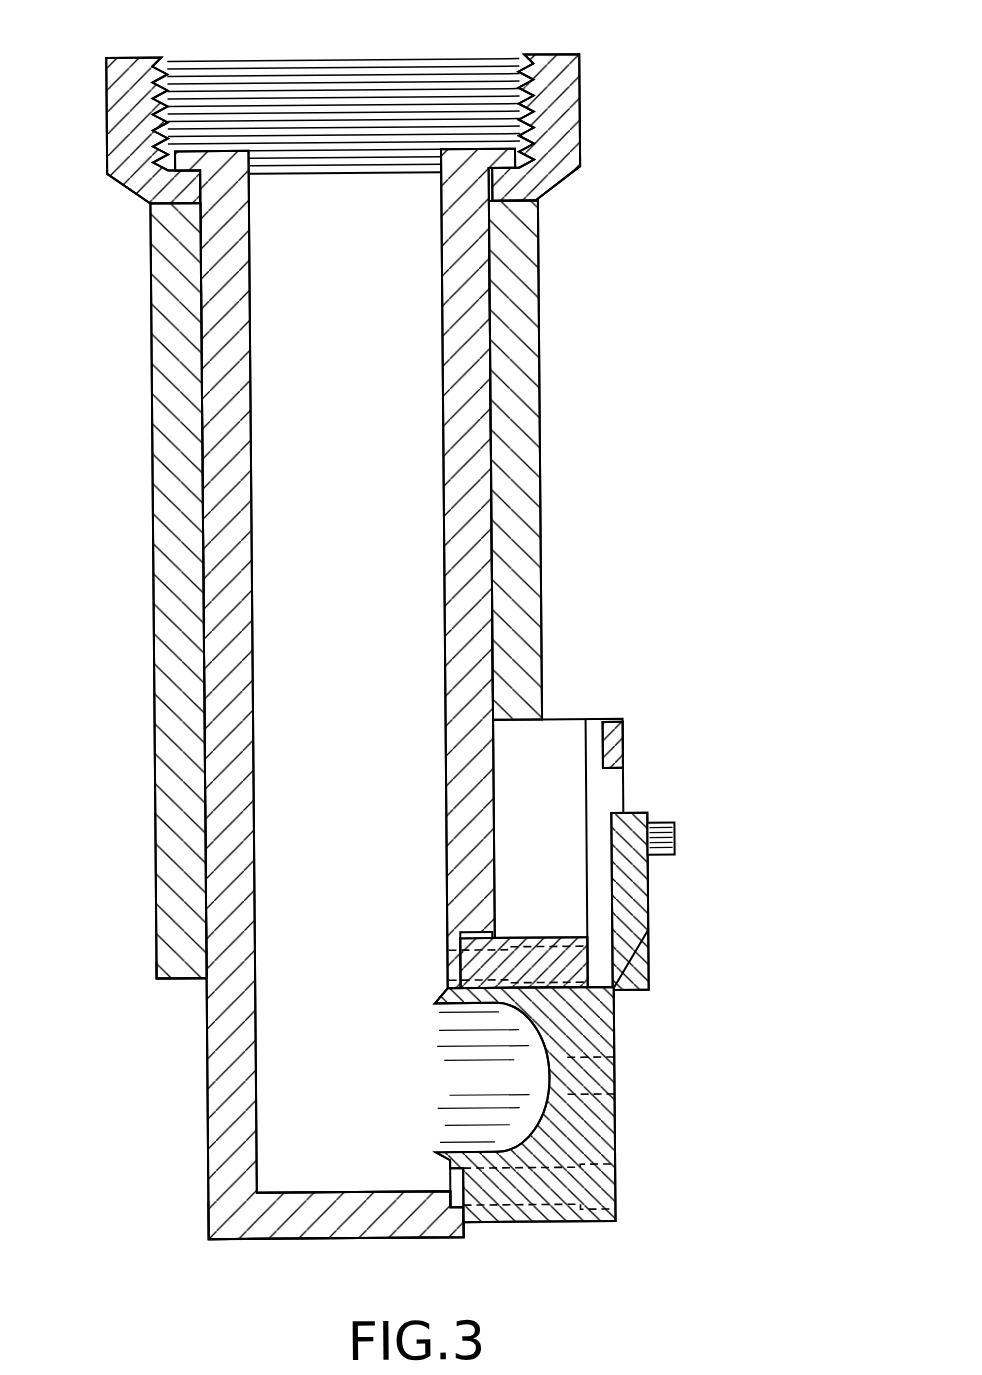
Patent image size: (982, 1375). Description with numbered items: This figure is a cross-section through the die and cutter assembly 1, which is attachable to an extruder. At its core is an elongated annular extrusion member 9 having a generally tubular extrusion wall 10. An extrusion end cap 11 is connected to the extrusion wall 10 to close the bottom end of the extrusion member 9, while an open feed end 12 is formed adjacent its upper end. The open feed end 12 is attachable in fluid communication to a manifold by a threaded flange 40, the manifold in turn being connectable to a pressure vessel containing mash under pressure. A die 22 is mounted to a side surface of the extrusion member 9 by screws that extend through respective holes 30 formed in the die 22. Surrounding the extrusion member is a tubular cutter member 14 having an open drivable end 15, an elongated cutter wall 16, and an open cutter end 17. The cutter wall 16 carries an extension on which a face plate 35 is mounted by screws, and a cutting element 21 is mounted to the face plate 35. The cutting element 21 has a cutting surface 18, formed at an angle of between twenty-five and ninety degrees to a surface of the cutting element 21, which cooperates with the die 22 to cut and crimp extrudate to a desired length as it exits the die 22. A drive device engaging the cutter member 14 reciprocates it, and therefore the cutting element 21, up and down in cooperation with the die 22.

The die and cutter assembly 1 is at (626, 303).
The annular extrusion member 9 is at (223, 1051).
The extrusion wall 10 is at (198, 1215).
The extrusion end cap 11 is at (296, 1221).
The open feed end 12 is at (356, 188).
The tubular cutter member 14 is at (544, 584).
The open drivable end 15 is at (539, 203).
The elongated cutter wall 16 is at (151, 656).
The open cutter end 17 is at (149, 936).
The cutting surface 18 is at (610, 986).
The cutting element 21 is at (629, 913).
The die 22 is at (526, 1213).
The holes 30 is at (523, 958).
The face plate 35 is at (604, 798).
The threaded flange 40 is at (565, 110).